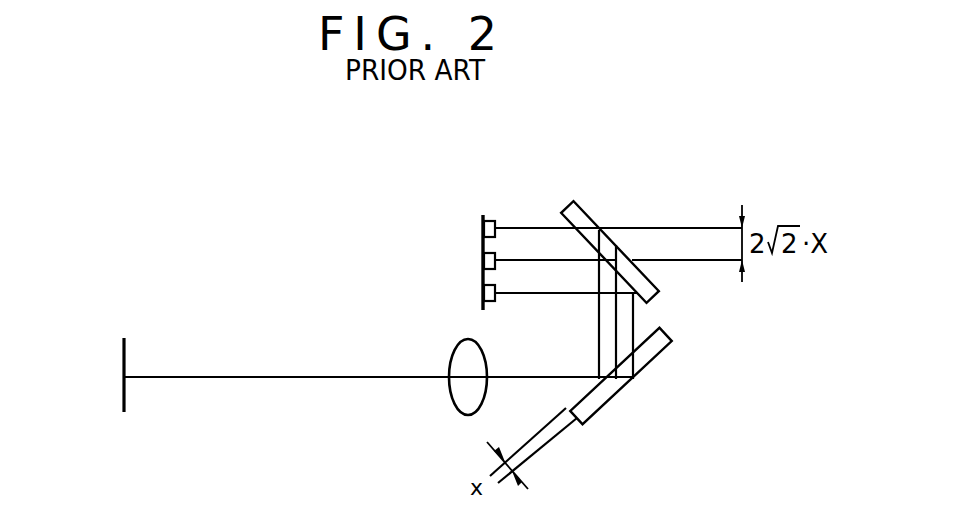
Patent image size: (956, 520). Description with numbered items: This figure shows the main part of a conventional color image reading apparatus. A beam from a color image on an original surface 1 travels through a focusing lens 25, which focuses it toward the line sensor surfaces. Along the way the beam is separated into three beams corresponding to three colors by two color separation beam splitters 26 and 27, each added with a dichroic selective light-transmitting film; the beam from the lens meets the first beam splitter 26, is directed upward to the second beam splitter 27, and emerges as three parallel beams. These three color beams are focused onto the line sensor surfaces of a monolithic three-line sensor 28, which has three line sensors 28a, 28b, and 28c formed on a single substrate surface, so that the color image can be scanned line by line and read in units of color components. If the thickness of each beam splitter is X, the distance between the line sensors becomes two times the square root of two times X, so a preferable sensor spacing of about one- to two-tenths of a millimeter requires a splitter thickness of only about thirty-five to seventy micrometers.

The original surface 1 is at (126, 350).
The focusing lens 25 is at (455, 343).
The color separation beam splitter 26 is at (655, 352).
The color separation beam splitter 27 is at (590, 213).
The monolithic 3-line sensor 28 is at (488, 243).
The line sensor 28a is at (488, 220).
The line sensor 28b is at (497, 256).
The line sensor 28c is at (496, 301).